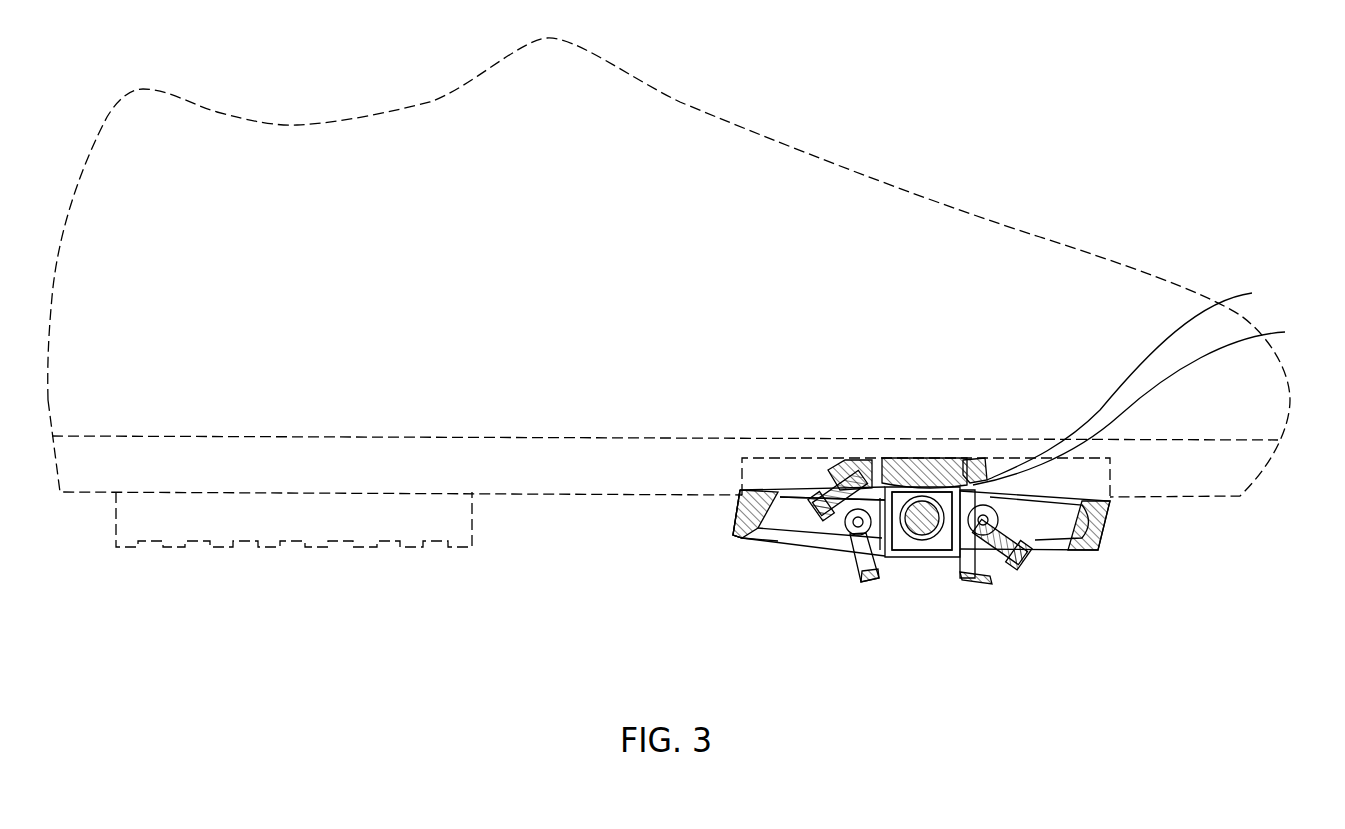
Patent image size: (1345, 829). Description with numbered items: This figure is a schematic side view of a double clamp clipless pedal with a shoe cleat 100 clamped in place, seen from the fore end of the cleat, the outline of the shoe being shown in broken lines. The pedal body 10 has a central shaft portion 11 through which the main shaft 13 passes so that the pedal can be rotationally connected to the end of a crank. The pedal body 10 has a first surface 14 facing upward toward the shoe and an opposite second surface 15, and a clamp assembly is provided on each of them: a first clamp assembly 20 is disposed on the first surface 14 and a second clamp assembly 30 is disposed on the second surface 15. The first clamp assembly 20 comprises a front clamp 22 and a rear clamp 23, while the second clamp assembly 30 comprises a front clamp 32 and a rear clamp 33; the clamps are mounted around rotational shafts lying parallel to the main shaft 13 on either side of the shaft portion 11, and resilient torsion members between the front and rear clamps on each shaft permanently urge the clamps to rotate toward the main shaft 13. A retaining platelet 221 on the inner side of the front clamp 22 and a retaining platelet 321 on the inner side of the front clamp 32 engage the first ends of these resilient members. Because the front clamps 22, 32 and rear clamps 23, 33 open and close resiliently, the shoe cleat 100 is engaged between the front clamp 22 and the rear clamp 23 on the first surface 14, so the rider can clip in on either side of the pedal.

The shoe cleat 100 is at (933, 470).
The pedal body 10 is at (1090, 543).
The shaft portion 11 is at (932, 557).
The main shaft 13 is at (917, 532).
The first surface 14 is at (787, 488).
The second surface 15 is at (777, 541).
The first clamp assembly 20 is at (867, 449).
The front clamp 22 is at (1122, 382).
The retaining platelet 221 is at (1148, 402).
The rear clamp 23 is at (830, 476).
The second clamp assembly 30 is at (929, 588).
The front clamp 32 is at (858, 583).
The retaining platelet 321 is at (883, 555).
The rear clamp 33 is at (1022, 573).